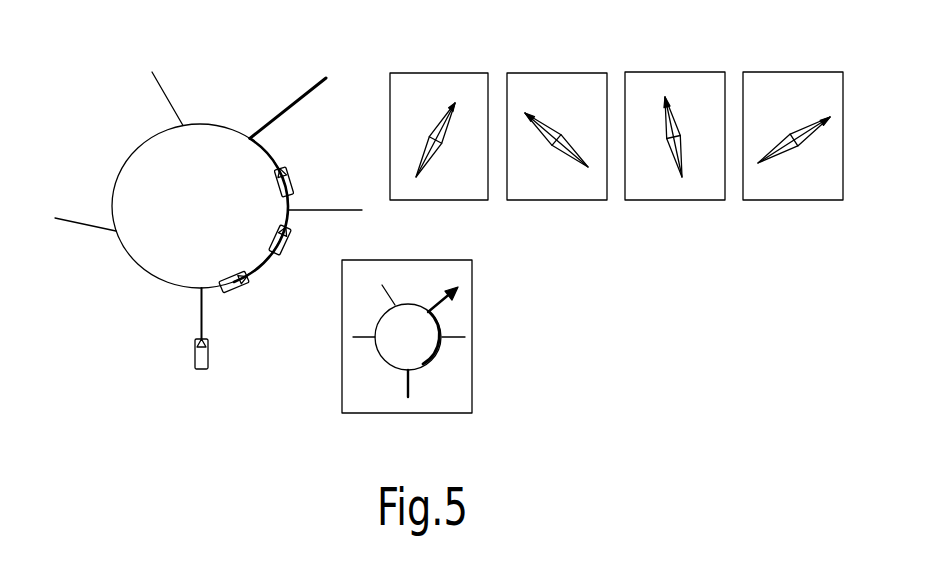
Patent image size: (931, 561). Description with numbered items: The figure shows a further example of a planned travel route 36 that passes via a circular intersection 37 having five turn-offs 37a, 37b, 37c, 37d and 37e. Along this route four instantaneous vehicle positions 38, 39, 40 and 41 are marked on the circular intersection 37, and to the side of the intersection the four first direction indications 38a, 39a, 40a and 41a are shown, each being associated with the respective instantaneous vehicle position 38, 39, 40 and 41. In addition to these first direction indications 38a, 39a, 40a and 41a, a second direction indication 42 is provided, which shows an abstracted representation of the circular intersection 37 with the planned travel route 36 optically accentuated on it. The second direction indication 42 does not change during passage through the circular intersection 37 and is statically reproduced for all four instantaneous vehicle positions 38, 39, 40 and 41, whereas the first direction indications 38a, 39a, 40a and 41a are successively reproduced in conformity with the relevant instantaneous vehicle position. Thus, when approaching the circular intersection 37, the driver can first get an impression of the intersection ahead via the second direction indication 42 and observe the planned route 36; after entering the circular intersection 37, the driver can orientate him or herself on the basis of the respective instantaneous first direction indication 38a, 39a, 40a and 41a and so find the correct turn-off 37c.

The planned travel route 36 is at (279, 113).
The circular intersection 37 is at (130, 158).
The turn-off 37a is at (197, 315).
The turn-off 37b is at (328, 210).
The turn-off 37c is at (317, 90).
The turn-off 37d is at (167, 102).
The turn-off 37e is at (80, 224).
The instantaneous vehicle position 38 is at (203, 340).
The instantaneous vehicle position 39 is at (250, 277).
The instantaneous vehicle position 40 is at (287, 222).
The instantaneous vehicle position 41 is at (275, 167).
The first direction indication 38a is at (430, 85).
The first direction indication 39a is at (550, 87).
The first direction indication 40a is at (648, 85).
The first direction indication 41a is at (780, 90).
The second direction indication 42 is at (462, 383).